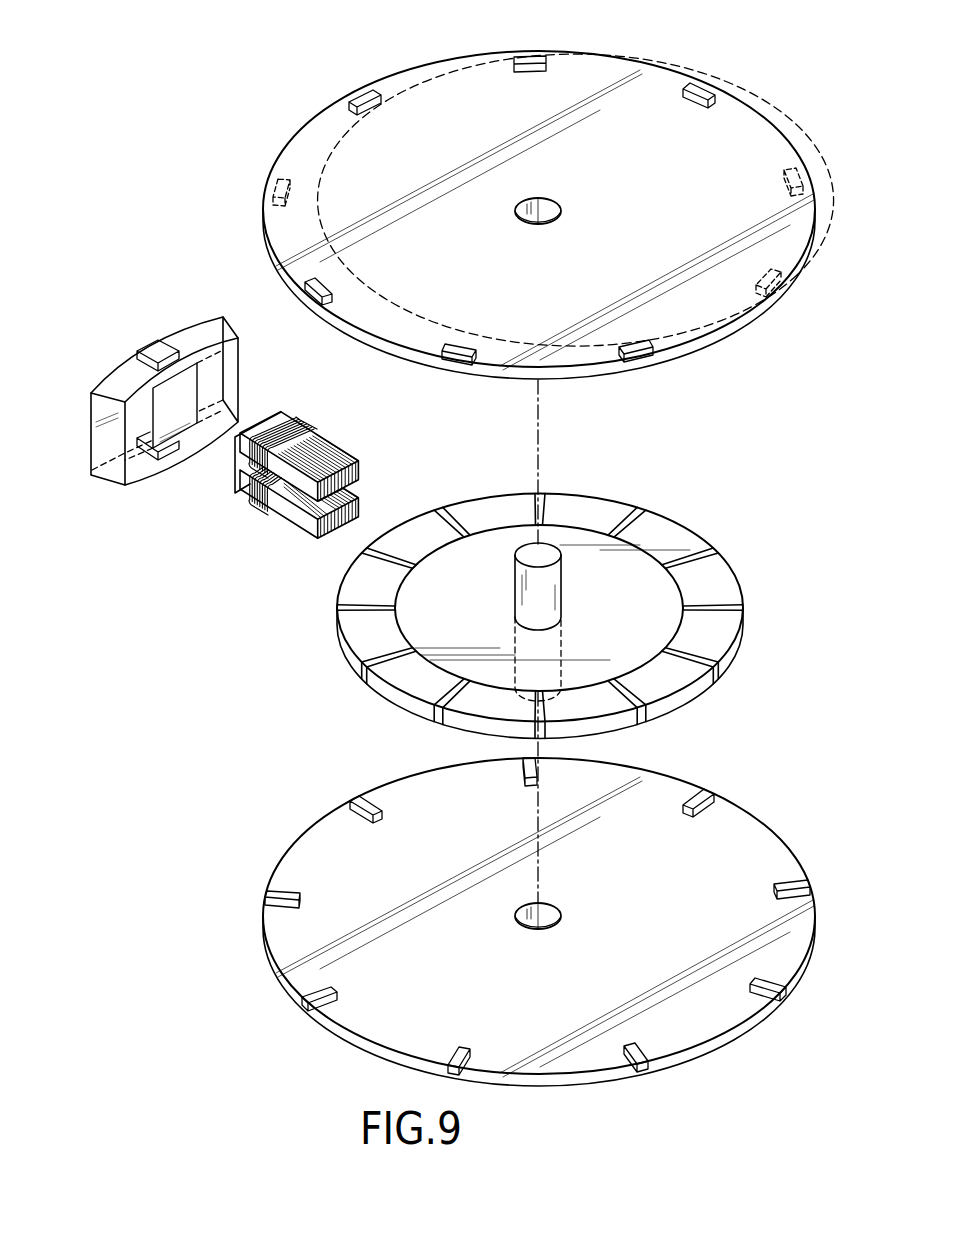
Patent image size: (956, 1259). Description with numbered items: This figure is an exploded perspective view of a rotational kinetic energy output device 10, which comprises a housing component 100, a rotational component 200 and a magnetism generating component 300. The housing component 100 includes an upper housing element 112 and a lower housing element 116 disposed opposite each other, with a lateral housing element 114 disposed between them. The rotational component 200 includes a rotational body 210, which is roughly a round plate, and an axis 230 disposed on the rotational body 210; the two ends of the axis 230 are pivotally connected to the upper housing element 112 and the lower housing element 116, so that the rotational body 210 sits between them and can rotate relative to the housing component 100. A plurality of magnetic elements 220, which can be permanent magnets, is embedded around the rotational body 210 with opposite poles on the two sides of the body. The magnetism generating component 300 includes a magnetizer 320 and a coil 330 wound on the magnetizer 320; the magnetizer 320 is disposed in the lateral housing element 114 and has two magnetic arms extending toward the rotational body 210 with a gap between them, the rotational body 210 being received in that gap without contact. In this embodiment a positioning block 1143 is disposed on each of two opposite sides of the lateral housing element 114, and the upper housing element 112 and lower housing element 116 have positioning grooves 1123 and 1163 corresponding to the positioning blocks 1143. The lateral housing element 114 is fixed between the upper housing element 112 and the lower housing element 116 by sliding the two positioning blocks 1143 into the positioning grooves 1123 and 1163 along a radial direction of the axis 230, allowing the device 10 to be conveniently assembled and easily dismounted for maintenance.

The rotational kinetic energy output device 10 is at (127, 24).
The housing component 100 is at (115, 313).
The upper housing element 112 is at (293, 145).
The positioning groove 1123 is at (357, 127).
The lateral housing element 114 is at (92, 371).
The positioning block 1143 is at (155, 340).
The lower housing element 116 is at (298, 846).
The positioning groove 1163 is at (350, 804).
The rotational component 200 is at (700, 508).
The rotational body 210 is at (578, 540).
The magnetic element 220 is at (415, 510).
The axis 230 is at (562, 578).
The magnetism generating component 300 is at (378, 430).
The magnetizer 320 is at (342, 439).
The coil 330 is at (298, 428).